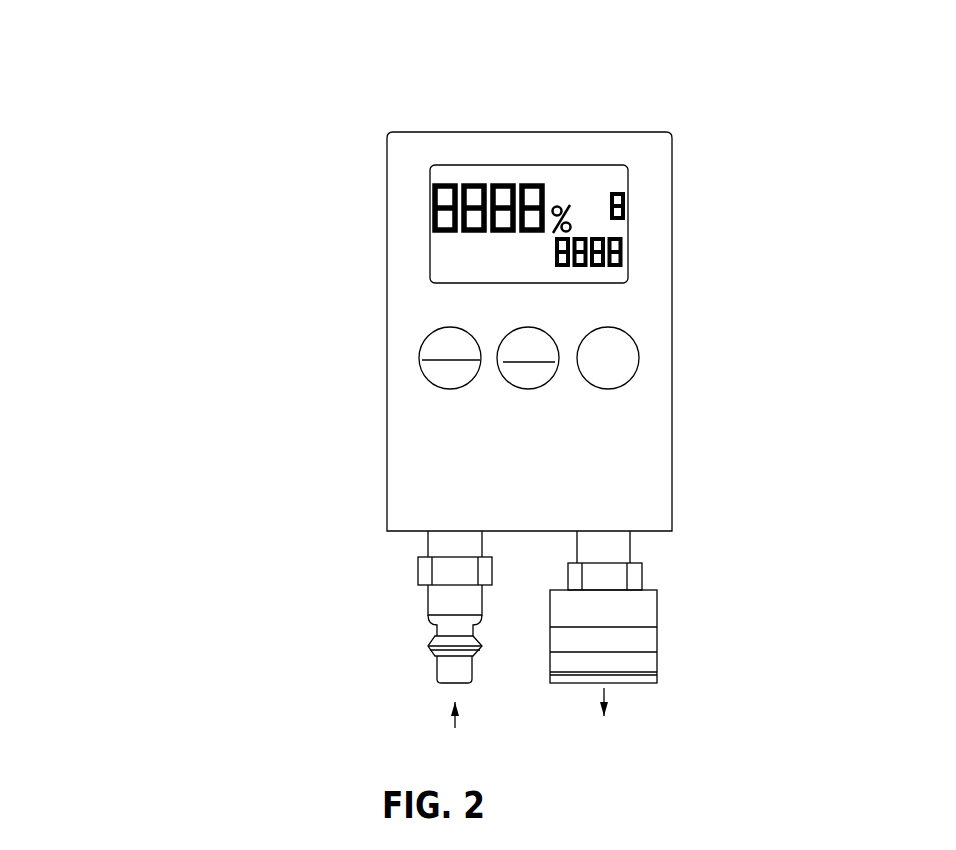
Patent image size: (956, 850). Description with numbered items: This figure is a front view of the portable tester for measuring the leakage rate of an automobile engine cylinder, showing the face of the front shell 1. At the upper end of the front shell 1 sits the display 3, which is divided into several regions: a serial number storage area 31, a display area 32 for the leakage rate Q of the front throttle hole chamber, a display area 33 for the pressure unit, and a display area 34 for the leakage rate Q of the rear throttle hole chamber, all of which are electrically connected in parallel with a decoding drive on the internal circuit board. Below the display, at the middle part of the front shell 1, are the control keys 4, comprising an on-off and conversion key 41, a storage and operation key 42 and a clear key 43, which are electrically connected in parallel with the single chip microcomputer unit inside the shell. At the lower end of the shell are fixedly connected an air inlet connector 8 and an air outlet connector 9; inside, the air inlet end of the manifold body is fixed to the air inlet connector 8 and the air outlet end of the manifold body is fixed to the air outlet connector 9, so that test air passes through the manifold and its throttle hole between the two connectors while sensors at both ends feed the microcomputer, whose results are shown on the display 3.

The front shell 1 is at (560, 131).
The display 3 is at (372, 154).
The serial number storage area 31 is at (577, 185).
The display area for a leakage rate Q of a front throttle hole chamber 32 is at (445, 192).
The display area for pressure unit 33 is at (442, 246).
The display area for a leakage rate Q of a rear throttle hole chamber 34 is at (520, 256).
The control keys 4 is at (378, 436).
The on-off and conversion key 41 is at (448, 343).
The storage and operation key 42 is at (527, 350).
The clear key 43 is at (607, 373).
The air inlet connector 8 is at (452, 598).
The air outlet connector 9 is at (627, 615).